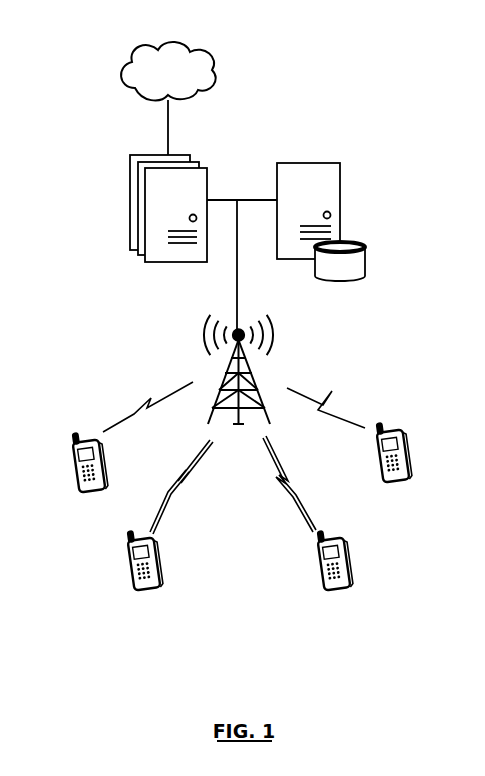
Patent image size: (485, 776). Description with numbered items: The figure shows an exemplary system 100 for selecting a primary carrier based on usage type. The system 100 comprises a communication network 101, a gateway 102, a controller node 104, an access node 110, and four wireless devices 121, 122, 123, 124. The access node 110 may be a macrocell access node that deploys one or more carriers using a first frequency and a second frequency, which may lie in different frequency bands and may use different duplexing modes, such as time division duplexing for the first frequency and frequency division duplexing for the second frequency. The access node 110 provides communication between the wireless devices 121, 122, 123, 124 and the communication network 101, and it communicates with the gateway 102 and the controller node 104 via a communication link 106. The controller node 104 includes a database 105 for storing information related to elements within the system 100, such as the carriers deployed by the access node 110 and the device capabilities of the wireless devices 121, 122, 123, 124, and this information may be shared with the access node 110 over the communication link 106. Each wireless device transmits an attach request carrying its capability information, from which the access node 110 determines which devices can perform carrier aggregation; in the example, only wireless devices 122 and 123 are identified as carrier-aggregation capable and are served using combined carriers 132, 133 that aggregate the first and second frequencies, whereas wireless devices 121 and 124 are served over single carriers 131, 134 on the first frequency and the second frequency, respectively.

The system 100 is at (341, 54).
The communication network 101 is at (152, 81).
The gateway 102 is at (130, 155).
The controller node 104 is at (340, 163).
The database 105 is at (365, 244).
The communication link 106 is at (237, 280).
The access node 110 is at (223, 387).
The wireless device 121 is at (75, 448).
The wireless device 122 is at (130, 583).
The wireless device 123 is at (319, 583).
The wireless device 124 is at (404, 439).
The wireless link on F1 131 is at (137, 410).
The combined carrier 132 is at (190, 473).
The combined carrier 133 is at (291, 483).
The wireless link on F2 134 is at (323, 395).